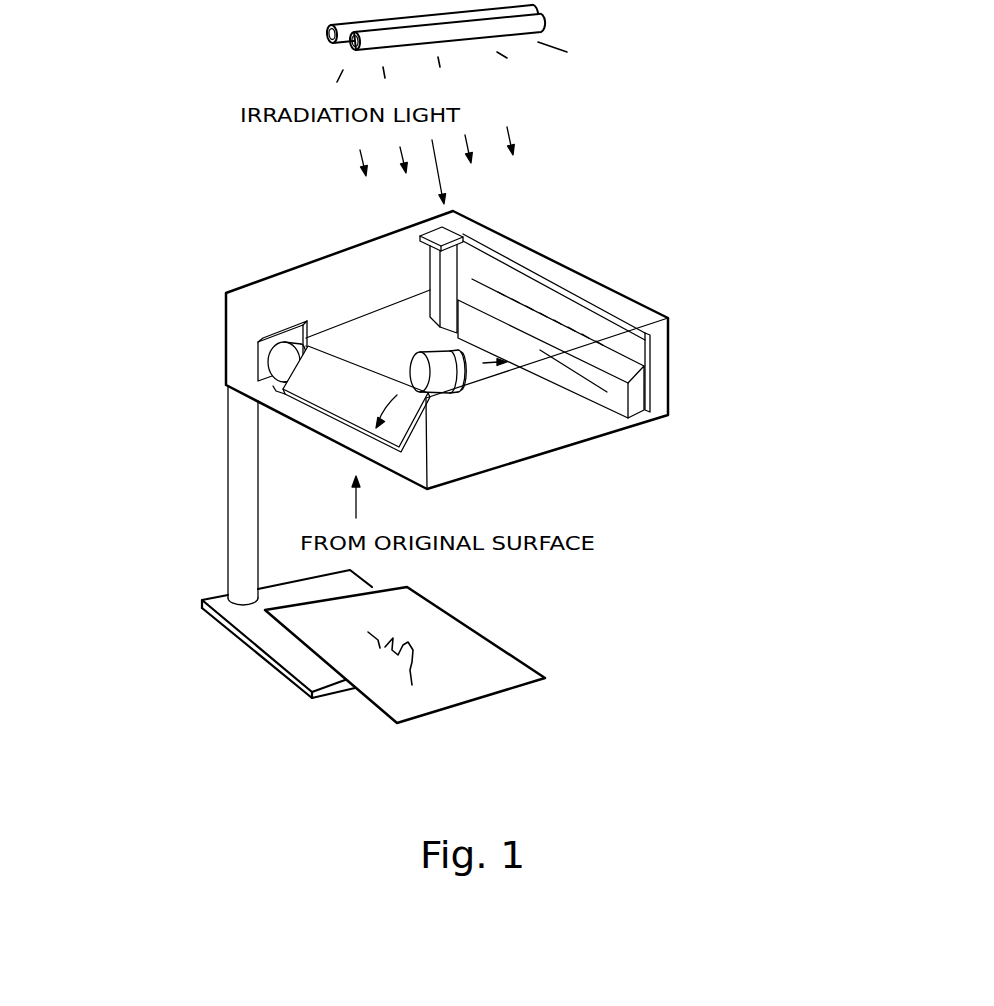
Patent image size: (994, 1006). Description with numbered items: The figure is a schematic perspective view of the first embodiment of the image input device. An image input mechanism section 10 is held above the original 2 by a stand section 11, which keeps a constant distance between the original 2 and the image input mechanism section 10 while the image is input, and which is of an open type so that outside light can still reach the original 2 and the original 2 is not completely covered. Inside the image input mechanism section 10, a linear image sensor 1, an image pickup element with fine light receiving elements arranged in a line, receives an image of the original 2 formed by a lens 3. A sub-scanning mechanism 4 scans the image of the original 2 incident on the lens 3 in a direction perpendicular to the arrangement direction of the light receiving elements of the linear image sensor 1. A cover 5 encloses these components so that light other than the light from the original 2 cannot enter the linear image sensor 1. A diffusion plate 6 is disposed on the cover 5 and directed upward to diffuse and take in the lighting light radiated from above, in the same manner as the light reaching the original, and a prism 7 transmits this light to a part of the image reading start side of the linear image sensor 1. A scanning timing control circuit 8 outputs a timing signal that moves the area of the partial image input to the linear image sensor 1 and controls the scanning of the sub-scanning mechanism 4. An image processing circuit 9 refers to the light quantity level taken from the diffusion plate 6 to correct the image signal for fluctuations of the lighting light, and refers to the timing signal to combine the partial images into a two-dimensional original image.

The linear image sensor 1 is at (631, 406).
The original 2 is at (493, 657).
The lens 3 is at (460, 376).
The sub-scanning mechanism 4 is at (400, 450).
The cover 5 is at (622, 289).
The diffusion plate 6 is at (458, 222).
The prism 7 is at (447, 278).
The scanning timing control circuit 8 is at (282, 352).
The image processing circuit 9 is at (652, 358).
The image input mechanism section 10 is at (608, 228).
The stand section 11 is at (242, 485).